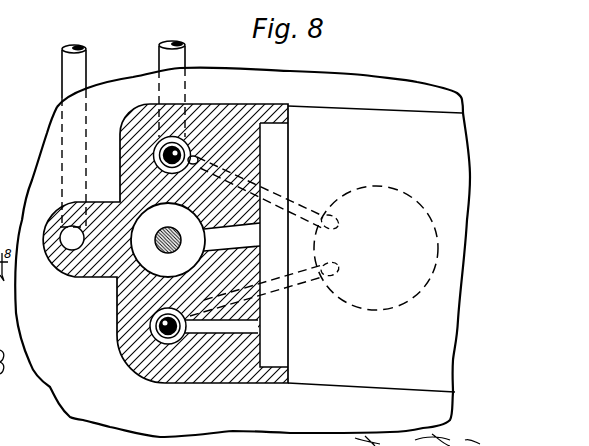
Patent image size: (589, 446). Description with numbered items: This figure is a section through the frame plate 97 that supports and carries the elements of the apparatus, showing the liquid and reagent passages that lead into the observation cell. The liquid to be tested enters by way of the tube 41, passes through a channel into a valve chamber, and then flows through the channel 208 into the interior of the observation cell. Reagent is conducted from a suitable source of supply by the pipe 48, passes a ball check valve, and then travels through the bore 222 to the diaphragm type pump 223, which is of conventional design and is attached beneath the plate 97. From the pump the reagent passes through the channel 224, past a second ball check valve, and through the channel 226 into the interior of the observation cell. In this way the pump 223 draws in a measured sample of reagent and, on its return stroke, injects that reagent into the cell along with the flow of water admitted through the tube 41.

The tube 41 is at (72, 70).
The pipe 48 is at (176, 53).
The bore 222 is at (292, 191).
The diaphragm type pump 223 is at (393, 190).
The channel 224 is at (292, 305).
The channel 208 is at (232, 237).
The channel 226 is at (219, 330).
The fragment 97 is at (9, 409).